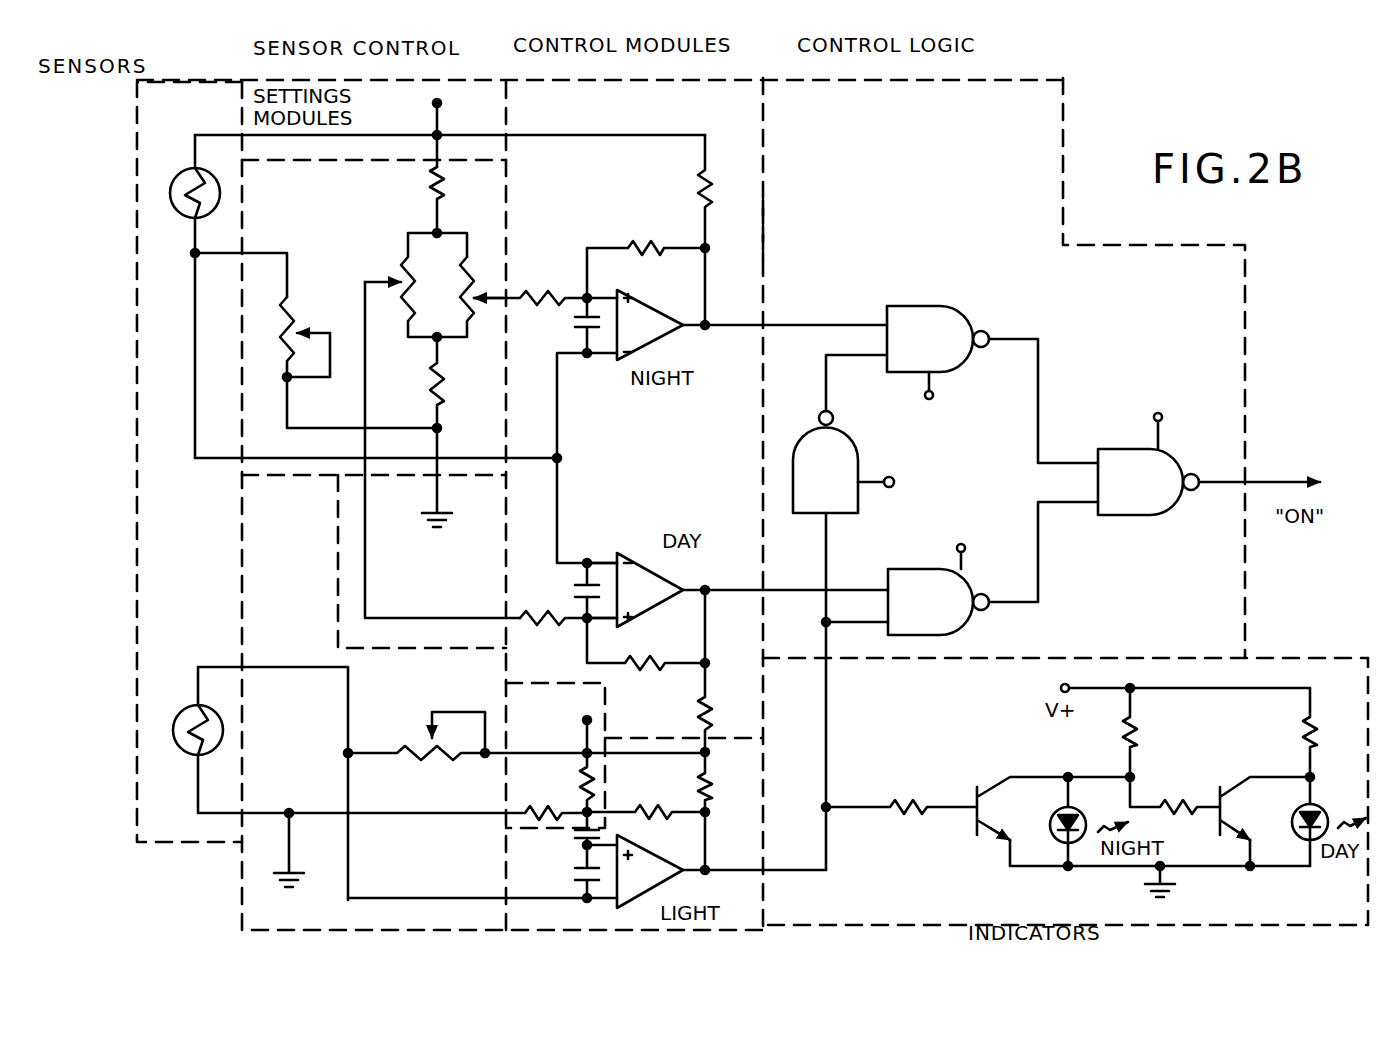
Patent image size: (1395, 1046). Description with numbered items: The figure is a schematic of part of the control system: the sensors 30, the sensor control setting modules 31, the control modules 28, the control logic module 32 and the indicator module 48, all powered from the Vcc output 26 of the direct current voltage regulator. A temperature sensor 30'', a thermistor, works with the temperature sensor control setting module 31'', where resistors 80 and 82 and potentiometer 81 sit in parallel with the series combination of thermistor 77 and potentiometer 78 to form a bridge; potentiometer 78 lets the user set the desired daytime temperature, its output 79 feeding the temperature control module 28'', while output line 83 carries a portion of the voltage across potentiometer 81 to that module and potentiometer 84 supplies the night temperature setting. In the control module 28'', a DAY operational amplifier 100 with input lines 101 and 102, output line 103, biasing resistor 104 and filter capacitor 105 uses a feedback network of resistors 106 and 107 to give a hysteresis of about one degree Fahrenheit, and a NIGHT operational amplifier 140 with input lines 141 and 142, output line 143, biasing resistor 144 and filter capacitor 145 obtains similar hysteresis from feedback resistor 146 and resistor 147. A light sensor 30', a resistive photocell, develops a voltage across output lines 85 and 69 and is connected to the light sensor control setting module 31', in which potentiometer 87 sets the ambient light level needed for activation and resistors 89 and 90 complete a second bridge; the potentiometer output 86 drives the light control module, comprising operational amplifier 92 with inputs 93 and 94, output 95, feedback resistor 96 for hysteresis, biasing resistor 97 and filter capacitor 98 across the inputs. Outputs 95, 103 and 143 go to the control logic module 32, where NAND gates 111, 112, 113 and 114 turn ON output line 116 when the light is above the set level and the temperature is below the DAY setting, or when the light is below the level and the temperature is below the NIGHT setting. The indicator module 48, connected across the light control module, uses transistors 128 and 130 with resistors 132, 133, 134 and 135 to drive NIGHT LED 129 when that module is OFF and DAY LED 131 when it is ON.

The output of the direct current voltage regulator 26 is at (434, 118).
The control modules 28 is at (656, 491).
The temperature control module 28'' is at (827, 215).
The sensors 30 is at (151, 462).
The light sensor 30' is at (219, 759).
The temperature sensor 30'' is at (146, 296).
The sensor control setting modules 31 is at (600, 492).
The light sensor control setting module 31' is at (471, 651).
The temperature sensor control setting module 31'' is at (339, 288).
The control logic module 32 is at (945, 68).
The indicator module 48 is at (1185, 648).
The output line 69 is at (318, 812).
The output line 77 is at (445, 343).
The potentiometer 78 is at (302, 320).
The output 79 is at (335, 428).
The resistor 80 is at (432, 188).
The potentiometer 81 is at (405, 268).
The resistor 82 is at (428, 392).
The output line 83 is at (366, 578).
The potentiometer 84 is at (474, 262).
The output line 85 is at (225, 665).
The output of potentiometer 86 is at (490, 765).
The light sensor potentiometer 87 is at (410, 745).
The resistor 89 is at (602, 790).
The resistor 90 is at (548, 810).
The operational amplifier 92 is at (662, 866).
The input 93 is at (598, 833).
The input 94 is at (602, 900).
The output 95 is at (693, 875).
The feedback resistor 96 is at (660, 822).
The biasing resistor 97 is at (715, 782).
The capacitor 98 is at (580, 882).
The operational amplifier 100 is at (648, 565).
The input line 101 is at (604, 565).
The input line 102 is at (608, 622).
The output line 103 is at (748, 590).
The biasing resistor 104 is at (712, 712).
The filter capacitor 105 is at (577, 588).
The resistor 106 is at (648, 668).
The resistor 107 is at (548, 628).
The NAND gate 111 is at (858, 450).
The NAND gate 112 is at (960, 355).
The NAND gate 113 is at (912, 569).
The NAND gate 114 is at (1160, 512).
The output line 116 is at (1225, 478).
The transistor 128 is at (972, 795).
The NIGHT LED 129 is at (1053, 835).
The transistor 130 is at (1215, 790).
The DAY LED 131 is at (1296, 814).
The resistor 132 is at (895, 825).
The resistor 133 is at (1135, 740).
The resistor 134 is at (1180, 805).
The resistor 135 is at (1305, 735).
The NIGHT operational amplifier 140 is at (672, 292).
The input line 141 is at (603, 290).
The input line 142 is at (598, 362).
The output line 143 is at (740, 328).
The biasing resistor 144 is at (700, 188).
The filter capacitor 145 is at (573, 322).
The feedback resistor 146 is at (640, 240).
The resistor 147 is at (545, 290).